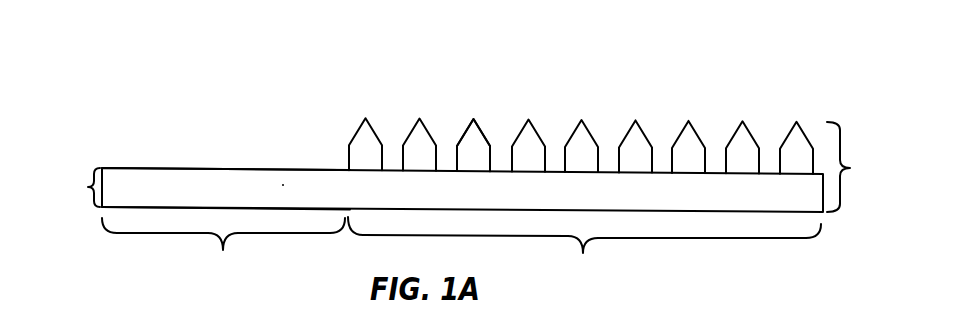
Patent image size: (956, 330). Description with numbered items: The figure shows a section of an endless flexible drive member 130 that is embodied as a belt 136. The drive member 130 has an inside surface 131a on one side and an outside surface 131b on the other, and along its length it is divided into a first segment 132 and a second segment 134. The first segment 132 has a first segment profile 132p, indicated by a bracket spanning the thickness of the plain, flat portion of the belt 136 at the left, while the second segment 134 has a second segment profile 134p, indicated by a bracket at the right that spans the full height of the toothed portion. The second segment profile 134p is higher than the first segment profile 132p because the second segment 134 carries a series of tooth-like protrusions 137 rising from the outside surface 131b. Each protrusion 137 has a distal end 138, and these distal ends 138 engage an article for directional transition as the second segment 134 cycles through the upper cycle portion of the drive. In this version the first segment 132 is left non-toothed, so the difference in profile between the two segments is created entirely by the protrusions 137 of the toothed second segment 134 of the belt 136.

The flexible drive member 130 is at (222, 190).
The inside surface 131a is at (150, 207).
The outside surface 131b is at (248, 168).
The first segment 132 is at (223, 255).
The first segment profile 132p is at (64, 187).
The second segment 134 is at (584, 255).
The second segment profile 134p is at (868, 167).
The belt 136 is at (283, 185).
The tooth-like protrusions 137 is at (474, 158).
The distal ends 138 is at (468, 123).